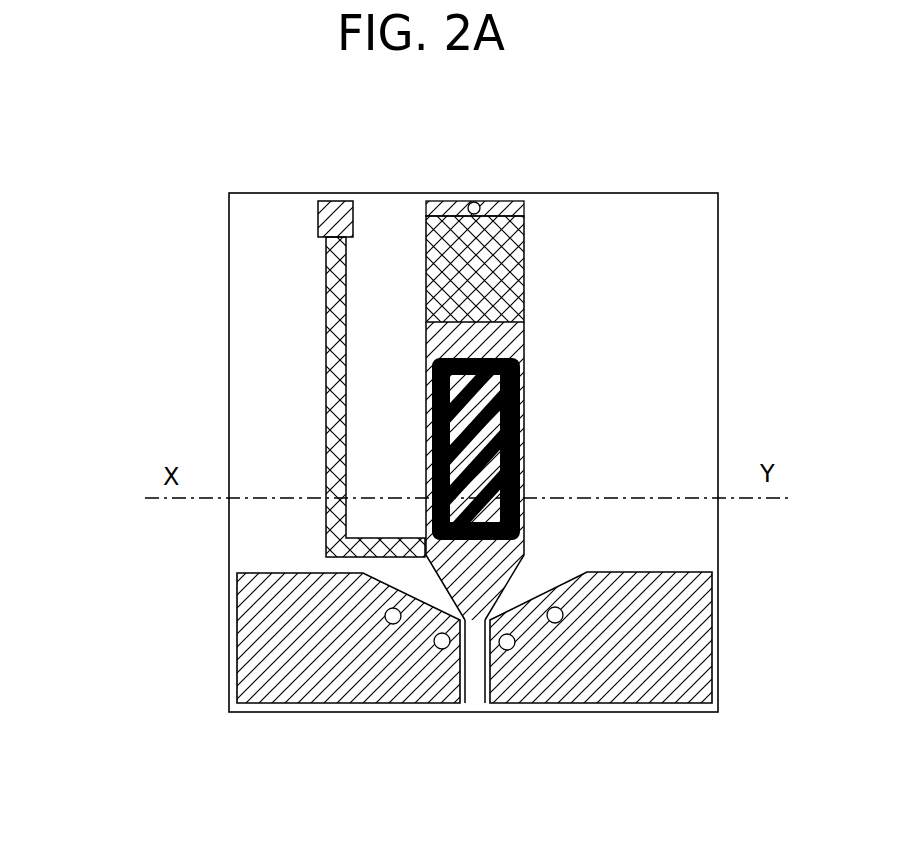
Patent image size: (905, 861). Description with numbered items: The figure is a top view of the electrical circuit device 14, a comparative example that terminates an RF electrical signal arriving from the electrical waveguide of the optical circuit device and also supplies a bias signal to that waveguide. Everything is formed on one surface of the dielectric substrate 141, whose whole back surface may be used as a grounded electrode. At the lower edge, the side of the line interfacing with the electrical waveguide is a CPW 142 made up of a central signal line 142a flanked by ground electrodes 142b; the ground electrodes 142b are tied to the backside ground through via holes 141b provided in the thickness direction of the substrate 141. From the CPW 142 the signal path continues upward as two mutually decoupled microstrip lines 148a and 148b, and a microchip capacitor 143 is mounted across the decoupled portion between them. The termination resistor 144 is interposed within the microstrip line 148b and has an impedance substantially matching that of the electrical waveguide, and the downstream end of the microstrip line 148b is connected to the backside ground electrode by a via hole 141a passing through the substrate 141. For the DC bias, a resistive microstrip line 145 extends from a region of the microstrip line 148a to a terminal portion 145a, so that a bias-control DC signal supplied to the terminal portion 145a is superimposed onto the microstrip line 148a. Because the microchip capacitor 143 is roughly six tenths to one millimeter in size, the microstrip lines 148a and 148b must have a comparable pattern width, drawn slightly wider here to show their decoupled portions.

The electrical circuit device 14 is at (735, 400).
The dielectric substrate 141 is at (718, 566).
The via hole 141a is at (474, 201).
The via holes 141b is at (387, 627).
The CPW 142 is at (468, 703).
The signal line 142a is at (482, 706).
The ground electrodes 142b is at (263, 623).
The microchip capacitor 143 is at (432, 458).
The termination resistor 144 is at (524, 286).
The microstrip line 145 is at (326, 372).
The terminal portion 145a is at (330, 200).
The microstrip line 148a is at (502, 556).
The microstrip line 148b is at (524, 346).